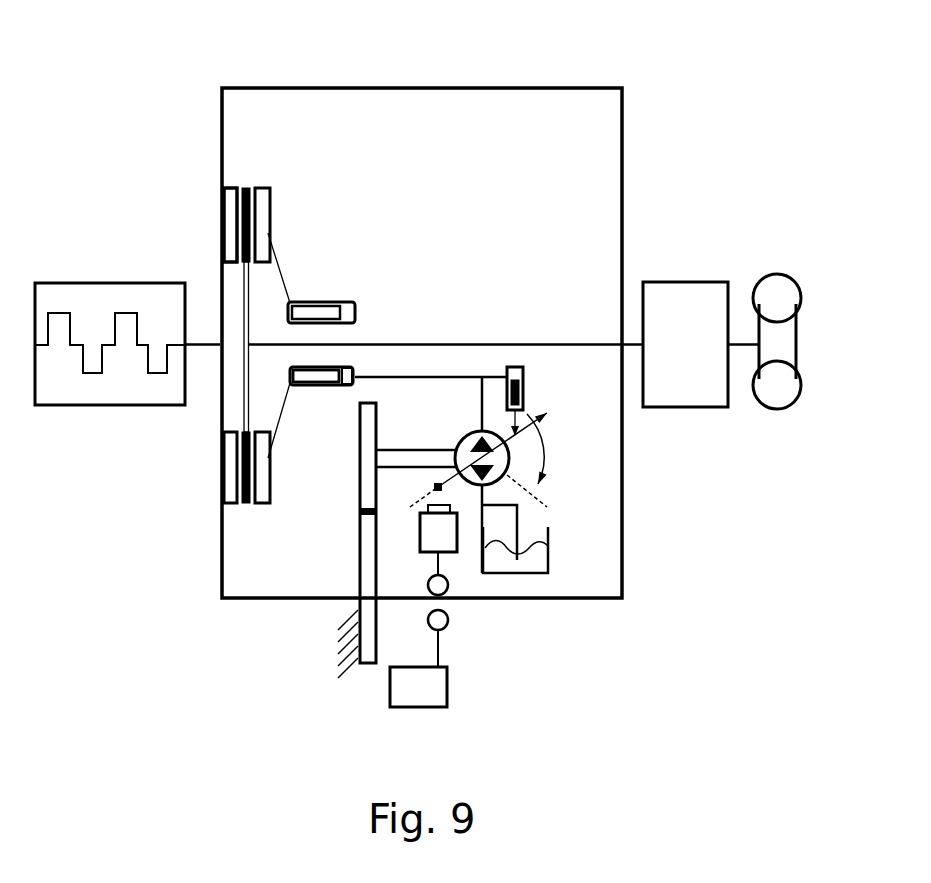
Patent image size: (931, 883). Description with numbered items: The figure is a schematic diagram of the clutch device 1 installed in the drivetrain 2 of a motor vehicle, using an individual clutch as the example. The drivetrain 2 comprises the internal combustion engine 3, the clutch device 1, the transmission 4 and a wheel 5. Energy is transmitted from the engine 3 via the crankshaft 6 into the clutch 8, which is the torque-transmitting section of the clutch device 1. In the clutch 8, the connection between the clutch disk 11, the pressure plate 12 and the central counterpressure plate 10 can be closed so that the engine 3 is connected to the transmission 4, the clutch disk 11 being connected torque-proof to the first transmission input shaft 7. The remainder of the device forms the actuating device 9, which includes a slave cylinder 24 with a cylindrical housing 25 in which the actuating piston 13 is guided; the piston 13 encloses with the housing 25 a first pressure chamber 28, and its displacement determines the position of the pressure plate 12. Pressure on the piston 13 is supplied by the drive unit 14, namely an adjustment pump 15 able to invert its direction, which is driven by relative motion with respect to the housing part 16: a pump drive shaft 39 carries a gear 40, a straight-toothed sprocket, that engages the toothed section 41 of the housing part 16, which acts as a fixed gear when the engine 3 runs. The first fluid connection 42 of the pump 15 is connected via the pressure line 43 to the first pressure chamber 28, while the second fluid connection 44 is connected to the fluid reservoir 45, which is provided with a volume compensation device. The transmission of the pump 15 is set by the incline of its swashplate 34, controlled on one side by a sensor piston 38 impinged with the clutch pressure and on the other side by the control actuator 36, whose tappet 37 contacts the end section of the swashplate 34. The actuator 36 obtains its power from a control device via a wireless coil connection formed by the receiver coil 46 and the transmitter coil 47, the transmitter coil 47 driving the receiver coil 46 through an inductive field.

The clutch device 1 is at (630, 112).
The drivetrain 2 is at (716, 75).
The internal combustion engine 3 is at (58, 266).
The transmission 4 is at (684, 266).
The wheel 5 is at (778, 273).
The crankshaft 6 is at (142, 338).
The first transmission input shaft 7 is at (443, 341).
The clutch 8 is at (262, 178).
The actuating device 9 is at (547, 614).
The counterpressure plate 10 is at (222, 202).
The clutch disk 11 is at (244, 504).
The pressure plate 12 is at (263, 504).
The actuating piston 13 is at (318, 386).
The drive unit 14 is at (556, 450).
The pump 15 is at (498, 456).
The housing part 16 is at (363, 664).
The slave cylinder 24 is at (350, 365).
The cylindrical housing 25 is at (321, 376).
The first pressure chamber 28 is at (348, 392).
The swashplate 34 is at (452, 482).
The actuator 36 is at (421, 530).
The tappet 37 is at (428, 508).
The sensor piston 38 is at (524, 392).
The pump drive shaft 39 is at (412, 450).
The gear 40 is at (360, 484).
The toothed section 41 is at (360, 511).
The first fluid connection 42 is at (470, 437).
The pressure line 43 is at (492, 375).
The second fluid connection 44 is at (484, 492).
The fluid reservoir 45 is at (549, 534).
The receiver coil 46 is at (449, 585).
The transmitter coil 47 is at (449, 620).